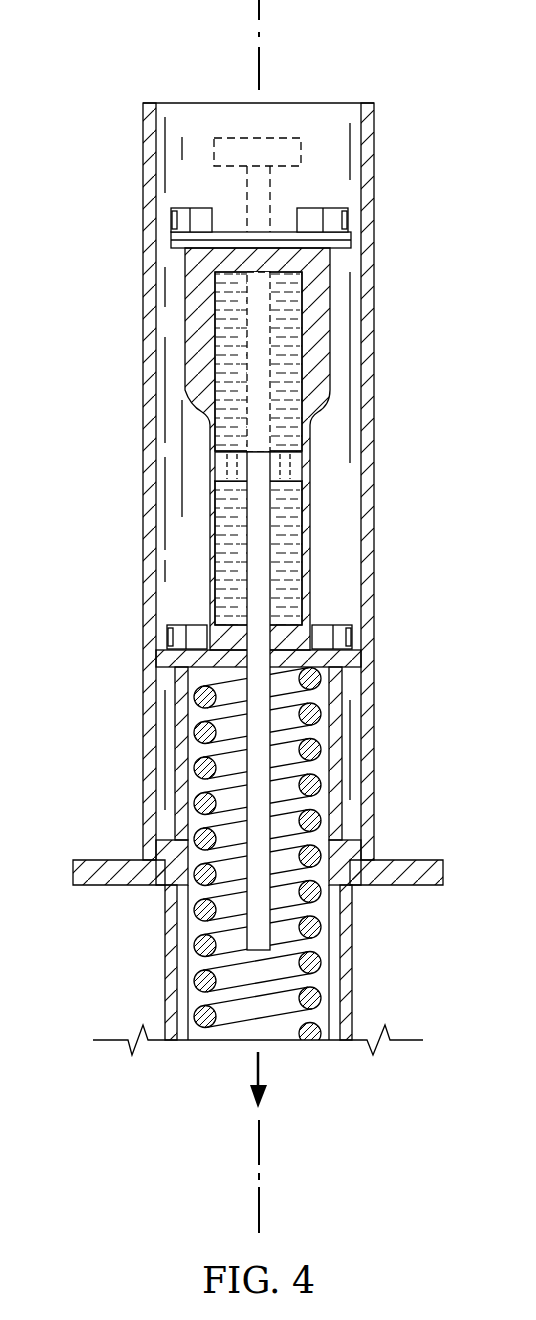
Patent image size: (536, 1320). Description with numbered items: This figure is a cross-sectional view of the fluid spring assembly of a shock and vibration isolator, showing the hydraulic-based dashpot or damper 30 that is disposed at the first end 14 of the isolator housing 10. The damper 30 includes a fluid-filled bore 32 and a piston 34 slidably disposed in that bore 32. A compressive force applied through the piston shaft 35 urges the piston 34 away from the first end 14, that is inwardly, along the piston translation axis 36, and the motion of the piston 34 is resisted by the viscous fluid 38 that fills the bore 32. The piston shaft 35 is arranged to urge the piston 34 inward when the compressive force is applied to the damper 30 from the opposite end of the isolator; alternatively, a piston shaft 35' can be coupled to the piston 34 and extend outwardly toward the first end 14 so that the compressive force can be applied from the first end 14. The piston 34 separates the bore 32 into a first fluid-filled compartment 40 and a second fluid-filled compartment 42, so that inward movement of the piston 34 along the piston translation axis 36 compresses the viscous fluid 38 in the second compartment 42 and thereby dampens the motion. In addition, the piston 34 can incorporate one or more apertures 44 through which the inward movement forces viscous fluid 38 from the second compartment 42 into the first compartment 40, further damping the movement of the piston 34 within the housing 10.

The isolator housing 10 is at (150, 755).
The first end 14 is at (127, 128).
The damper 30 is at (86, 499).
The fluid-filled bore 32 is at (220, 572).
The piston 34 is at (283, 445).
The piston shaft 35 is at (342, 701).
The piston shaft 35' is at (345, 362).
The piston translation axis 36 is at (264, 70).
The viscous fluid 38 is at (283, 372).
The first fluid-filled compartment 40 is at (174, 323).
The second fluid-filled compartment 42 is at (174, 596).
The aperture 44 is at (212, 467).